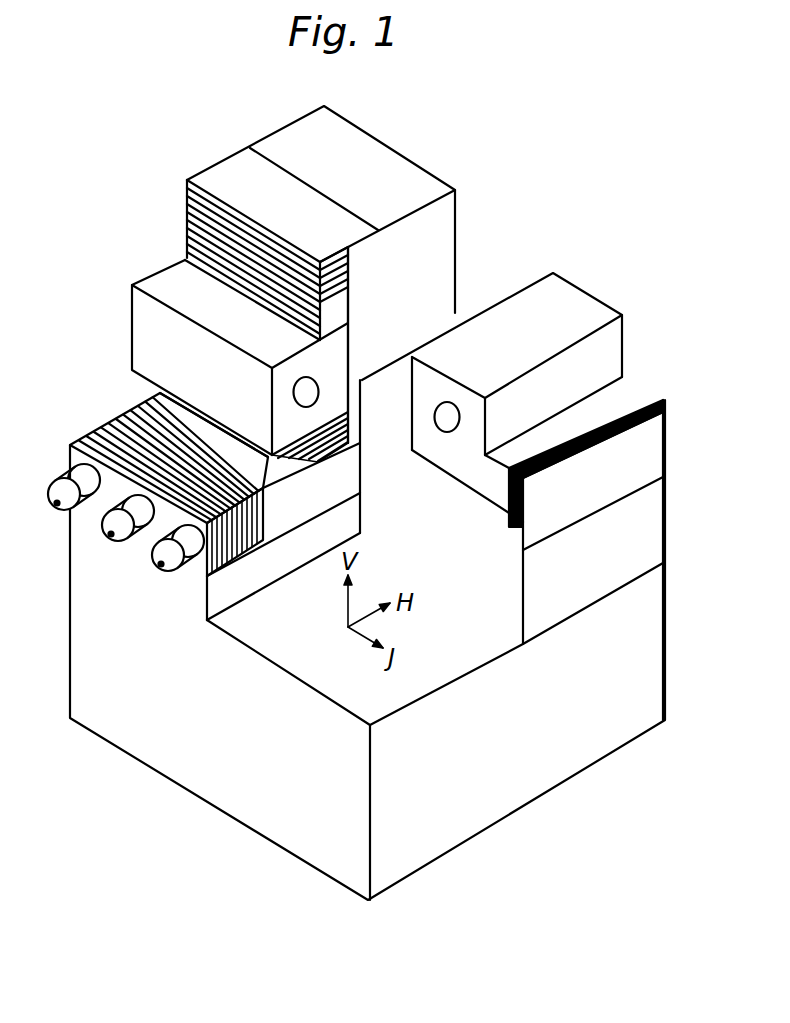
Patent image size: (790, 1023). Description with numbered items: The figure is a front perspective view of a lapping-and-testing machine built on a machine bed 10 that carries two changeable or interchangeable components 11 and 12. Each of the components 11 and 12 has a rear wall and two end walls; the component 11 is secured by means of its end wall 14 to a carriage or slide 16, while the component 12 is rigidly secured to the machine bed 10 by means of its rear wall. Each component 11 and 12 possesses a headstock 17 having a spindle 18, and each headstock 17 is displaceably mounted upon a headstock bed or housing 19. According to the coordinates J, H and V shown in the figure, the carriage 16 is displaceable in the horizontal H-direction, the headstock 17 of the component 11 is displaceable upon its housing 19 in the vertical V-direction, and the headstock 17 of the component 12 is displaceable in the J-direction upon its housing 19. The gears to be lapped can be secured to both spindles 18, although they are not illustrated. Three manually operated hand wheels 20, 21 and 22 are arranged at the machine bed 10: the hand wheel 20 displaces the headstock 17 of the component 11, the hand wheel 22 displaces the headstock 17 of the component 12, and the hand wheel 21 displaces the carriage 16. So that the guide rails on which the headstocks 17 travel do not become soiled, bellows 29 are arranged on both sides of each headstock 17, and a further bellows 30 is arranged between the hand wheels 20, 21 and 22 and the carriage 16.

The machine bed 10 is at (523, 780).
The interchangeable component 11 is at (178, 237).
The interchangeable component 12 is at (575, 273).
The end wall 14 is at (600, 540).
The carriage 16 is at (170, 405).
The headstock 17 is at (155, 318).
The spindle 18 is at (318, 382).
The headstock bed 19 is at (489, 547).
The hand wheel 20 is at (72, 468).
The hand wheel 21 is at (103, 522).
The hand wheel 22 is at (157, 547).
The bellows 29 is at (350, 278).
The bellows 30 is at (115, 427).